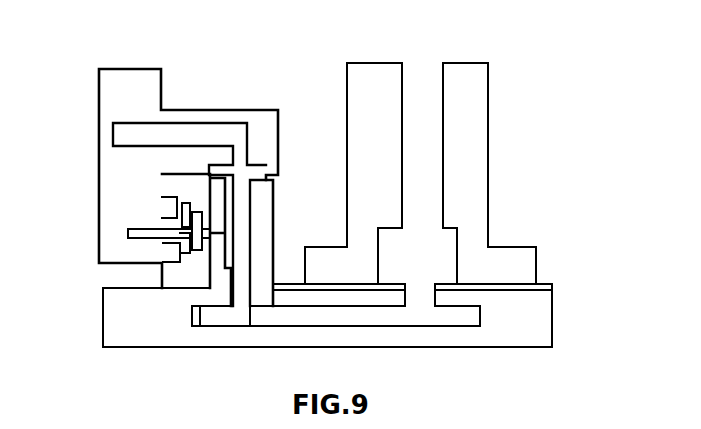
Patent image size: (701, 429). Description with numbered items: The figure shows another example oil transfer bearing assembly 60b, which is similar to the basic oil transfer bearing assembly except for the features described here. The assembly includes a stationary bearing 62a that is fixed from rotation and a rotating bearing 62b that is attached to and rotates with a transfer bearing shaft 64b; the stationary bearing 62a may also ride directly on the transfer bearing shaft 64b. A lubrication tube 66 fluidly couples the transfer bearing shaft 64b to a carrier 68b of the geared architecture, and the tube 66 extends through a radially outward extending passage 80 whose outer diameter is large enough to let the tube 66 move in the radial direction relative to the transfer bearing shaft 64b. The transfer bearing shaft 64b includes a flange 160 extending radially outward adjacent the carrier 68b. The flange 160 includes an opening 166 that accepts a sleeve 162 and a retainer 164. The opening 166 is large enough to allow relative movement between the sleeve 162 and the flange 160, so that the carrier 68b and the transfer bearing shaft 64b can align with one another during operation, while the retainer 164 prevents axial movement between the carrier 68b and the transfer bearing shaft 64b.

The oil transfer bearing assembly 60b is at (505, 49).
The stationary bearing 62a is at (488, 105).
The rotating bearing 62b is at (552, 287).
The transfer bearing shaft 64b is at (500, 335).
The lubrication tube 66 is at (258, 193).
The carrier 68b is at (173, 110).
The radially outward extending passage 80 is at (247, 261).
The flange 160 is at (170, 208).
The sleeve 162 is at (188, 210).
The retainer 164 is at (200, 228).
The opening 166 is at (170, 249).